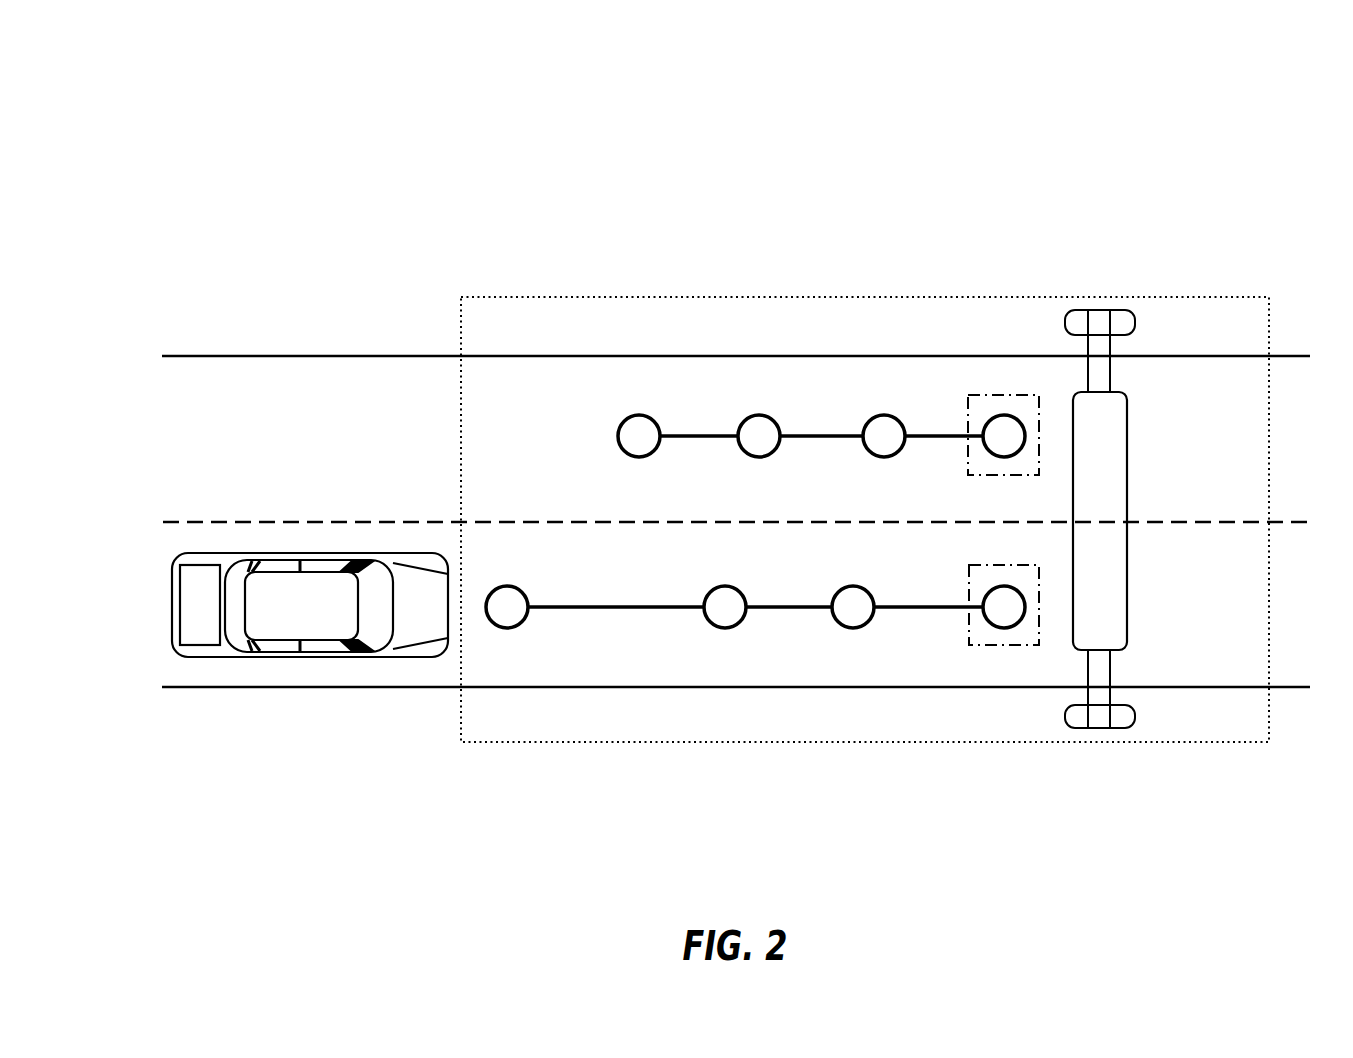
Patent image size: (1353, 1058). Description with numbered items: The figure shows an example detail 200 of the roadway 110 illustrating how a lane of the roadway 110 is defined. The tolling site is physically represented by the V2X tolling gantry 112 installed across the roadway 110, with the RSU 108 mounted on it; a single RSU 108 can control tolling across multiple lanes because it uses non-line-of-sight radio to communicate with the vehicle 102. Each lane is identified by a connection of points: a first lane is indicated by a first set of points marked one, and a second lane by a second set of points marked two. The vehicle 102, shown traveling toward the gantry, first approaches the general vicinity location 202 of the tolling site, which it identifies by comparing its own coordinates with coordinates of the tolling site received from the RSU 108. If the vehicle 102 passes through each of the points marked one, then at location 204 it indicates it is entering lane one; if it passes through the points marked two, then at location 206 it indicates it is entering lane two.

The example detail of the roadway 200 is at (240, 66).
The vehicle 102 is at (313, 628).
The RSU 108 is at (1127, 490).
The roadway 110 is at (1193, 687).
The V2X tolling gantry 112 is at (1101, 310).
The general vicinity location 202 is at (958, 743).
The location 204 is at (1008, 395).
The location 206 is at (1008, 565).